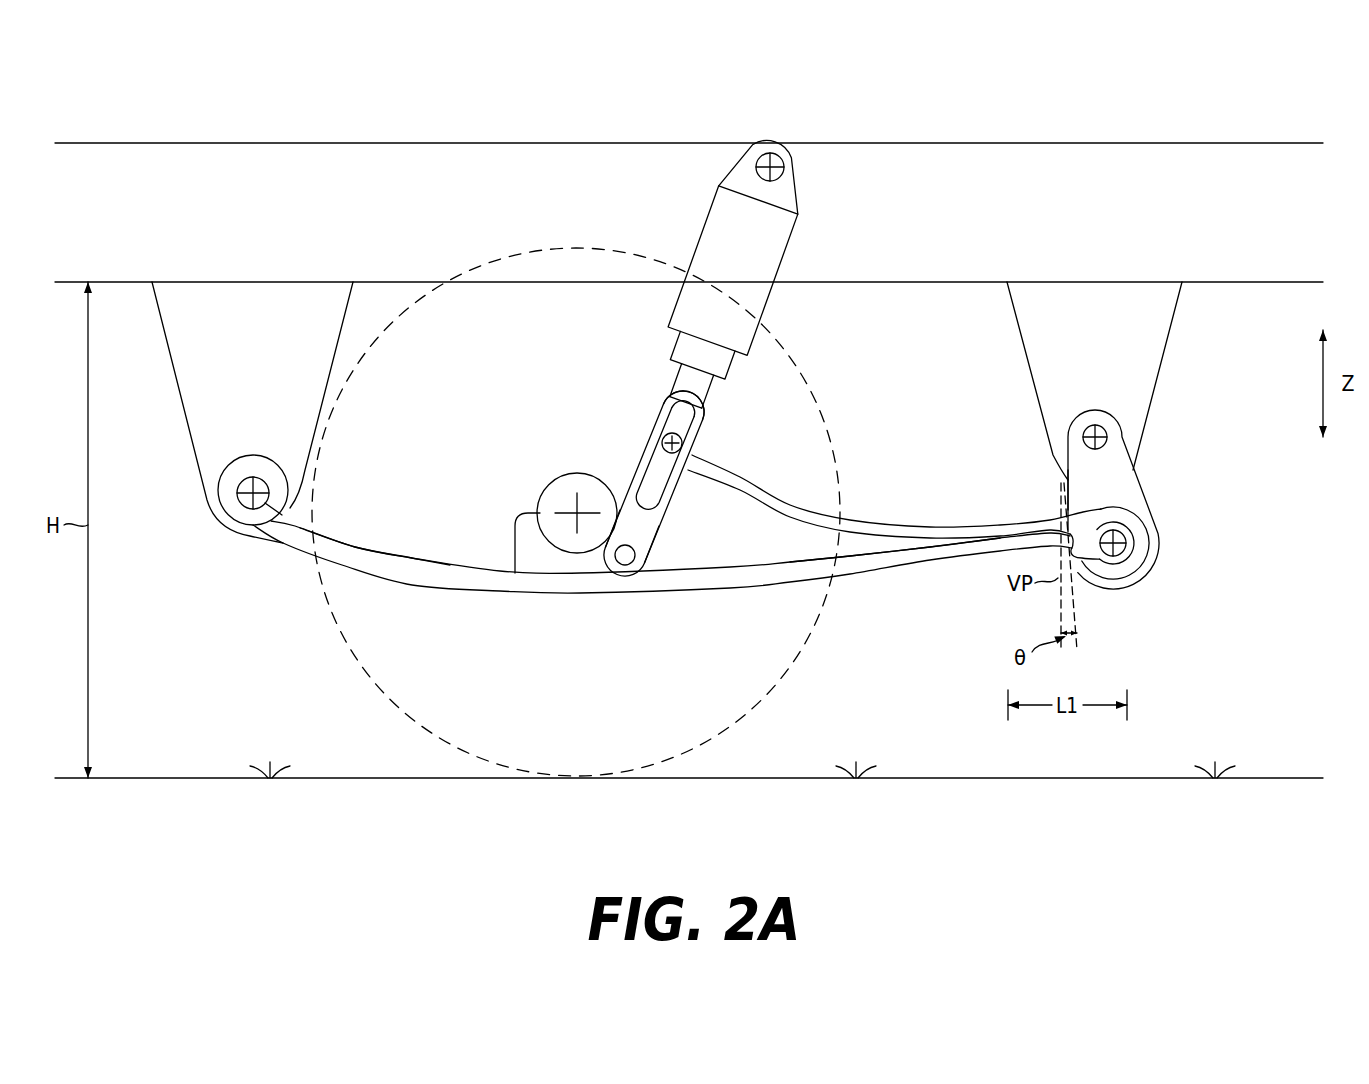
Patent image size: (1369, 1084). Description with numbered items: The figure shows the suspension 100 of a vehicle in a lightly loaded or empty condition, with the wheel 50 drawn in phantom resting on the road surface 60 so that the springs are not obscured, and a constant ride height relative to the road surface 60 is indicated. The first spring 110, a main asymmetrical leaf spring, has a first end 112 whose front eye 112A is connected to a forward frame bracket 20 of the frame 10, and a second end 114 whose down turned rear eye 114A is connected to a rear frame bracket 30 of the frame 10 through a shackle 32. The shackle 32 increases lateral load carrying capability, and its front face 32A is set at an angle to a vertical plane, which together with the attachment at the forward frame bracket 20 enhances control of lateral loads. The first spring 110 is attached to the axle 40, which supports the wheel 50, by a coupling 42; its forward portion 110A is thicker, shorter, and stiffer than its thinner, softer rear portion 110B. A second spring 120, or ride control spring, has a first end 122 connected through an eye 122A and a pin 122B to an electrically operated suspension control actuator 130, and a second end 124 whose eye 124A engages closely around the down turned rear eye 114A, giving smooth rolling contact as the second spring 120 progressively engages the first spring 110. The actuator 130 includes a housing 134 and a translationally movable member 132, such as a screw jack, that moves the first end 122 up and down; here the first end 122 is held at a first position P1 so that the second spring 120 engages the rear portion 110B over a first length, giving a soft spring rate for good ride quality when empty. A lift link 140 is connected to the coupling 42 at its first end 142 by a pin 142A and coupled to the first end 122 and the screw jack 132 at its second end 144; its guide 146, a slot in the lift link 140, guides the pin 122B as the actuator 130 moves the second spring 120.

The frame 10 is at (1088, 163).
The forward frame bracket 20 is at (212, 412).
The rear frame bracket 30 is at (1147, 352).
The shackle 32 is at (1128, 485).
The front face 32A is at (1064, 490).
The axle 40 is at (552, 498).
The coupling 42 is at (577, 569).
The wheel 50 is at (780, 358).
The road surface 60 is at (918, 853).
The suspension 100 is at (908, 354).
The first spring 110 is at (502, 587).
The forward portion 110A is at (425, 560).
The rear portion 110B is at (916, 562).
The first end 112 is at (247, 520).
The front eye 112A is at (247, 456).
The second end 114 is at (1115, 566).
The rear eye 114A is at (1128, 543).
The second spring 120 is at (890, 522).
The first end 122 is at (703, 423).
The eye 122A is at (665, 405).
The pin 122B is at (690, 458).
The second end 124 is at (1133, 518).
The eye 124A is at (1137, 566).
The electrically operated suspension control actuator 130 is at (801, 231).
The translationally movable member 132 is at (703, 383).
The housing 134 is at (767, 262).
The lift link 140 is at (637, 532).
The first end 142 is at (643, 567).
The pin 142A is at (625, 567).
The second end 144 is at (652, 447).
The guide 146 is at (655, 490).
The first position P1 is at (698, 444).